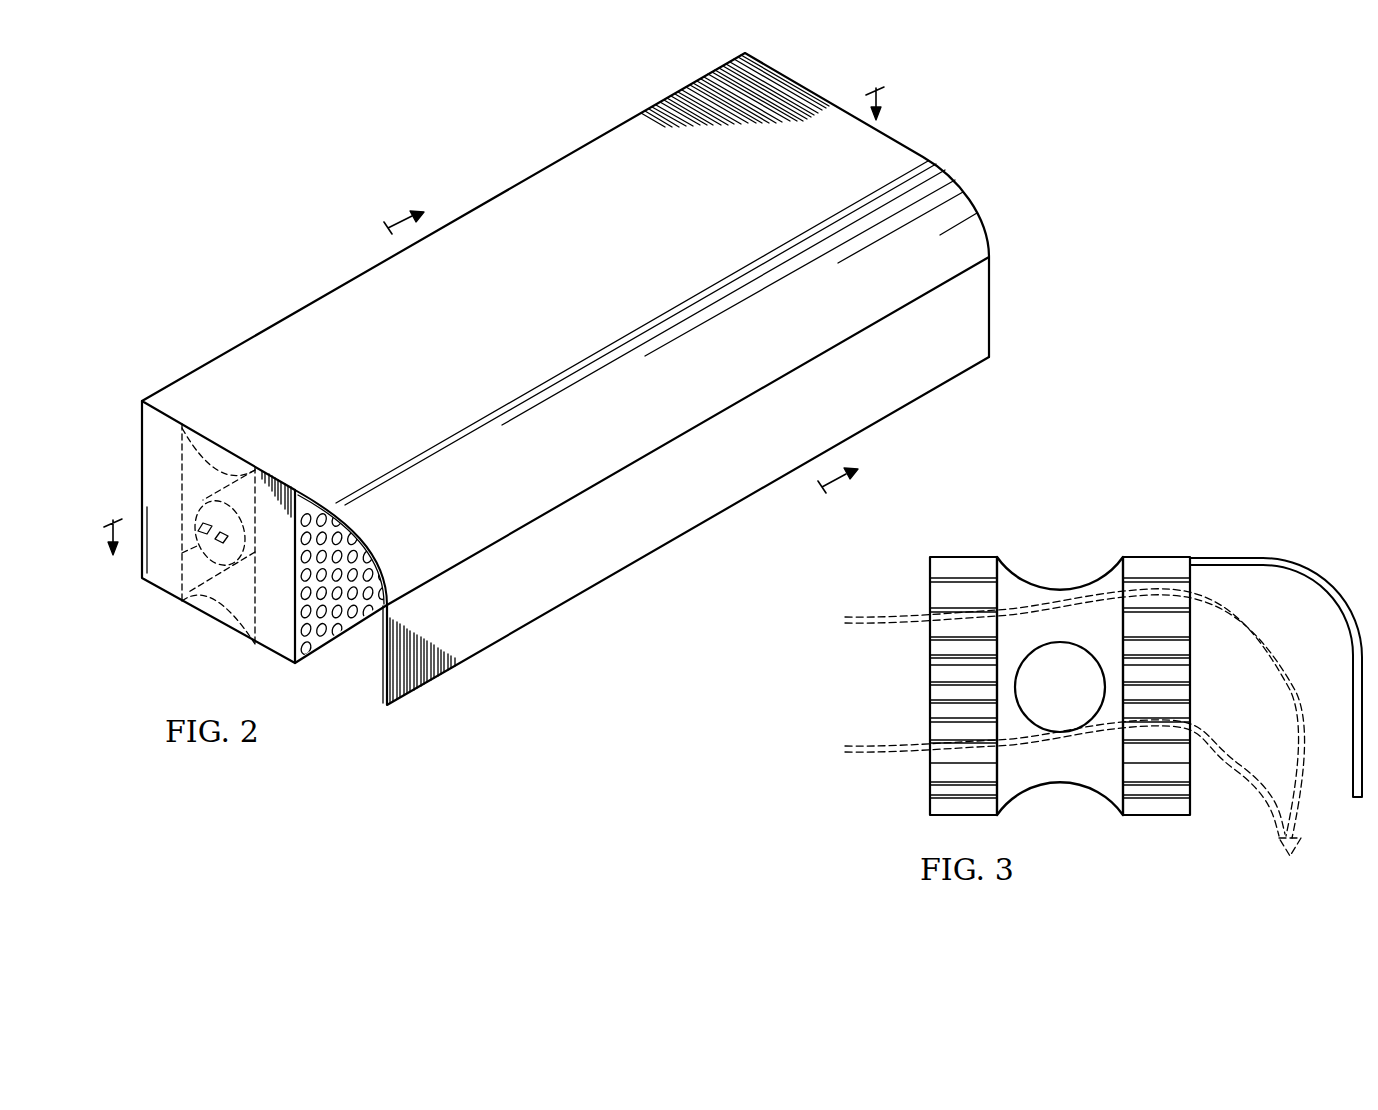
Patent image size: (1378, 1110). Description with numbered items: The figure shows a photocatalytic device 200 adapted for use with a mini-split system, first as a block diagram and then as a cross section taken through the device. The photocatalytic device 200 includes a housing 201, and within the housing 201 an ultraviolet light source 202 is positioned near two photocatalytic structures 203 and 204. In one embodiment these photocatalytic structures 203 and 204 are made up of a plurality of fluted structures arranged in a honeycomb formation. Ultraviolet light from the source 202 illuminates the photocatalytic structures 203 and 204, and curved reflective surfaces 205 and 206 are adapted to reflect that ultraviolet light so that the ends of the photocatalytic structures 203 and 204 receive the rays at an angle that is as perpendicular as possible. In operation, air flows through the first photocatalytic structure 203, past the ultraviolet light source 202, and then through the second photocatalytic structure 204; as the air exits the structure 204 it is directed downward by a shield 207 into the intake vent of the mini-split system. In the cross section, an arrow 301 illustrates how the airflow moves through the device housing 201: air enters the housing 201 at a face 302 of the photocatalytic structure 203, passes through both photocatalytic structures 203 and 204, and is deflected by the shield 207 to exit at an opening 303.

In FIG. 2, the photocatalytic device 200 is at (428, 149).
In FIG. 3, the photocatalytic device 200 is at (1210, 443).
In FIG. 2, the housing 201 is at (548, 161).
In FIG. 3, the housing 201 is at (1126, 554).
In FIG. 2, the ultraviolet light source 202 is at (200, 582).
In FIG. 3, the ultraviolet light source 202 is at (1040, 701).
In FIG. 2, the photocatalytic structure 203 is at (147, 430).
In FIG. 3, the photocatalytic structure 203 is at (963, 558).
In FIG. 2, the photocatalytic structure 204 is at (279, 651).
In FIG. 3, the photocatalytic structure 204 is at (1173, 558).
In FIG. 2, the curved reflective surface 205 is at (206, 618).
In FIG. 3, the curved reflective surface 205 is at (1060, 788).
In FIG. 2, the curved reflective surface 206 is at (218, 462).
In FIG. 3, the curved reflective surface 206 is at (1058, 588).
In FIG. 2, the shield 207 is at (992, 300).
In FIG. 3, the shield 207 is at (1286, 558).
In FIG. 3, the arrow 301 is at (1296, 849).
In FIG. 3, the face 302 is at (929, 588).
In FIG. 3, the opening 303 is at (1231, 806).